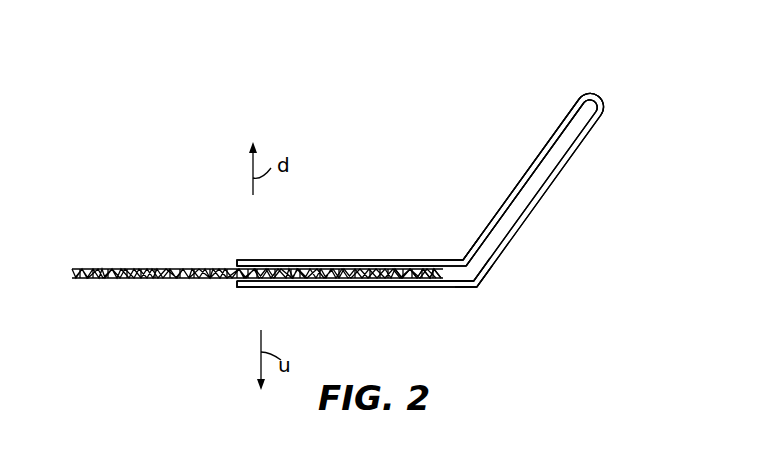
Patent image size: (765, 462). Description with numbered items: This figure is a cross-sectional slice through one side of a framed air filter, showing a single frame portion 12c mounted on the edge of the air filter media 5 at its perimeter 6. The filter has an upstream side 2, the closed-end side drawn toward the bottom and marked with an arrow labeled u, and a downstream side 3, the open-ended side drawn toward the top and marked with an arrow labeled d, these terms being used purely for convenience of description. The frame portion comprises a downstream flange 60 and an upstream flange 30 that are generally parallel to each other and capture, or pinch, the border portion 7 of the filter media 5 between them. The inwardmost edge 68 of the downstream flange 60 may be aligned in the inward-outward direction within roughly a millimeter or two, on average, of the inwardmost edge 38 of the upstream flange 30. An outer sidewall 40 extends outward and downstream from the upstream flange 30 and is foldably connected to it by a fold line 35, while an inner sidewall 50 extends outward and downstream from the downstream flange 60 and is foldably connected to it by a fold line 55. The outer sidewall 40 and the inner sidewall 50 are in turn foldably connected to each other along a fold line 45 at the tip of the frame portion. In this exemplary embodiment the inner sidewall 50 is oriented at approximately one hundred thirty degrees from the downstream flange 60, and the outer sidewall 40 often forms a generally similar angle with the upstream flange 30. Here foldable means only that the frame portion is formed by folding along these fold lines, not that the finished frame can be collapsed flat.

The upstream side 2 is at (534, 272).
The downstream side 3 is at (510, 95).
The air filter media 5 is at (124, 270).
The perimeter 6 is at (451, 281).
The border portion 7 is at (404, 273).
The frame portion 12c is at (585, 160).
The upstream flange 30 is at (344, 287).
The fold line 35 is at (475, 284).
The inwardmost edge of upstream flange 38 is at (237, 285).
The outer sidewall 40 is at (546, 192).
The fold line 45 is at (600, 95).
The inner sidewall 50 is at (520, 183).
The fold line 55 is at (462, 258).
The downstream flange 60 is at (344, 259).
The inwardmost edge of downstream flange 68 is at (236, 262).